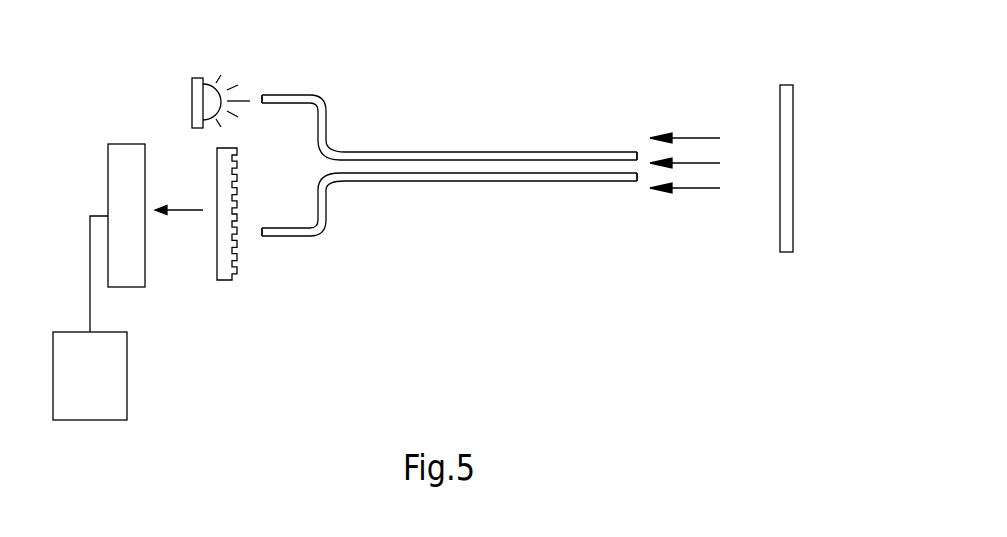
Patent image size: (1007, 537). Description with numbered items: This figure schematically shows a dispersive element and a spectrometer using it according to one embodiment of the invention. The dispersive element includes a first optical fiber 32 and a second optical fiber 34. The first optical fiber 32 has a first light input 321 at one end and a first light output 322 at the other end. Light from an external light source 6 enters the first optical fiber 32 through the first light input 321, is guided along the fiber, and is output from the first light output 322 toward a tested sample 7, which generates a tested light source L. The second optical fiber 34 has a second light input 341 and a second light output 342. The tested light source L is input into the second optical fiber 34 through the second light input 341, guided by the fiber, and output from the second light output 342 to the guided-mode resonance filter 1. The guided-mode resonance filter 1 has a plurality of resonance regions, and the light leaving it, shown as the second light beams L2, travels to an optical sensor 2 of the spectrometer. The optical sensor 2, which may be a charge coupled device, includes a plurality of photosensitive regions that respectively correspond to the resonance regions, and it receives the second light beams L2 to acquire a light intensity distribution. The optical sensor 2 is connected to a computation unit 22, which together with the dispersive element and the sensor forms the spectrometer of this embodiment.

The guided-mode resonance filter 1 is at (219, 272).
The optical sensor 2 is at (113, 153).
The computation unit 22 is at (122, 377).
The external light source 6 is at (206, 83).
The tested sample 7 is at (782, 252).
The first optical fiber 32 is at (323, 98).
The first light input 321 is at (262, 99).
The first light output 322 is at (638, 152).
The second optical fiber 34 is at (328, 214).
The second light input 341 is at (638, 181).
The second light output 342 is at (262, 236).
The tested light source L is at (685, 146).
The second light beams L2 is at (179, 194).